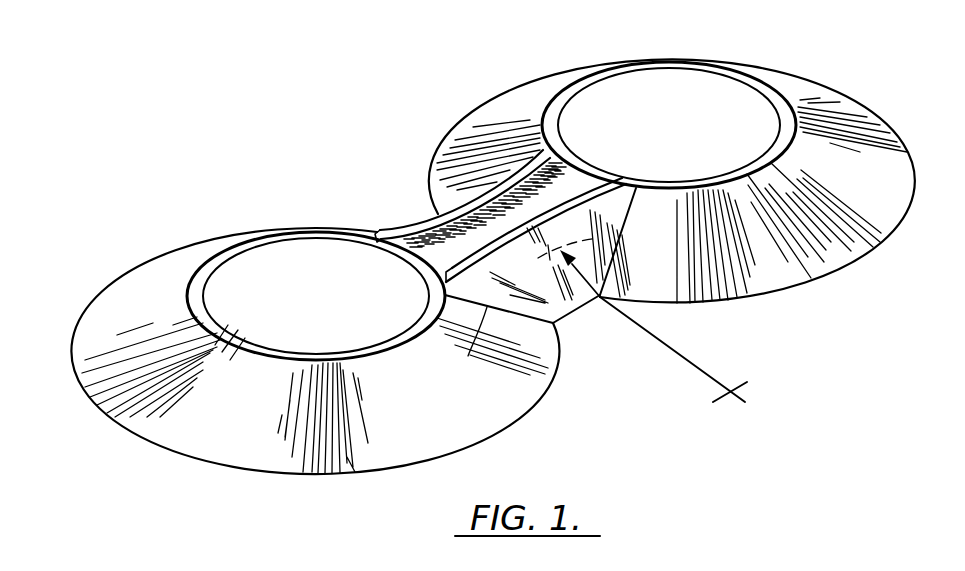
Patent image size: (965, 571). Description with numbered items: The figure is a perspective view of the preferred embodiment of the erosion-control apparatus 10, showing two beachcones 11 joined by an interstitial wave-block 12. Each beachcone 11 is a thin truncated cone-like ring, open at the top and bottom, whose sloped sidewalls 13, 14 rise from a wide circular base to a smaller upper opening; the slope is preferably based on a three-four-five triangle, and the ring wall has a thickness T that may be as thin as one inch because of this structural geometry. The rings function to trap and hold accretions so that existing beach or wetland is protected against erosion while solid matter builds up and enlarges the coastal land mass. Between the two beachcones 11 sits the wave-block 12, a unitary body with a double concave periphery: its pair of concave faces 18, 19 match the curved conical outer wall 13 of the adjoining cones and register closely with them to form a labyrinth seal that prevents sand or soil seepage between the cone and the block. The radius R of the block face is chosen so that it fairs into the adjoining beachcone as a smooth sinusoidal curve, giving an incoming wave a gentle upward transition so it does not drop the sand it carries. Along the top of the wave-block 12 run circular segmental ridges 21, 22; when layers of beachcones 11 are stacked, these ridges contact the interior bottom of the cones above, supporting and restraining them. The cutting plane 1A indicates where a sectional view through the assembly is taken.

The apparatus 10 is at (338, 113).
The beachcone 11 is at (260, 450).
The wave-block 12 is at (553, 292).
The sidewall 13 is at (163, 273).
The sidewall 14 is at (240, 333).
The concave face 18 is at (468, 356).
The concave face 19 is at (617, 245).
The circular segmental ridge 21 is at (413, 218).
The circular segmental ridge 22 is at (602, 184).
The thickness T is at (152, 298).
The radius R is at (690, 360).
The section line 1A is at (420, 200).